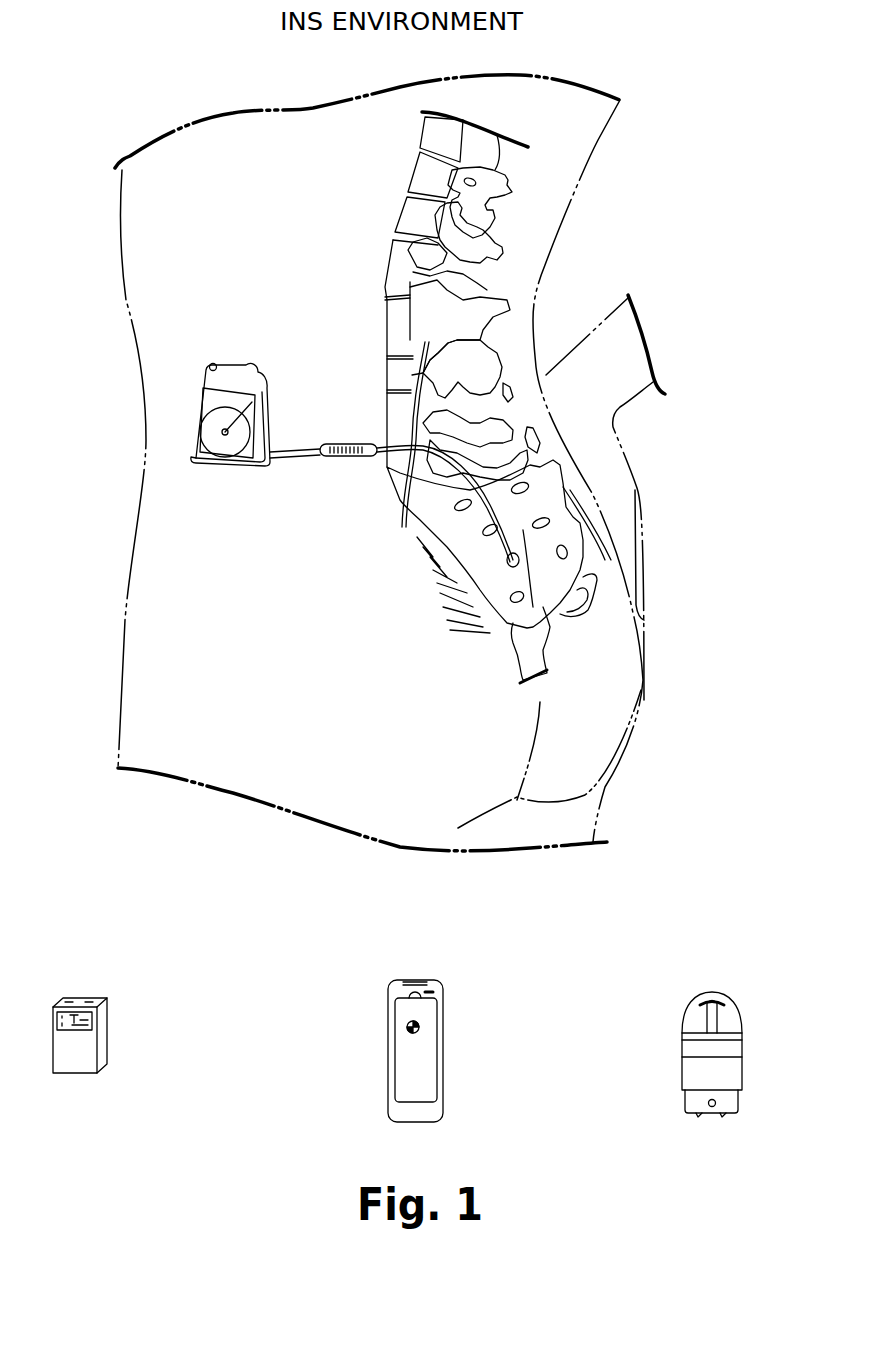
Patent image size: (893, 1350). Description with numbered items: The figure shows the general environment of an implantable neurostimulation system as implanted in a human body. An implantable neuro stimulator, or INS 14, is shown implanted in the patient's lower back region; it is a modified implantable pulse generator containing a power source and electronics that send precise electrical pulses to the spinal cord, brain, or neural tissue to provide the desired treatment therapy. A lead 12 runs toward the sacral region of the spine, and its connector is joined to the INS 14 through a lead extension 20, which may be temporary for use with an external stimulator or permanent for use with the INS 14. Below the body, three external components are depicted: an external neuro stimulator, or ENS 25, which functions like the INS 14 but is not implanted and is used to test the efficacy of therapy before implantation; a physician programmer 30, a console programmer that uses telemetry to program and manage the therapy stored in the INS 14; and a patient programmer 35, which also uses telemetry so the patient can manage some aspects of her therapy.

The lead 12 is at (425, 487).
The implantable neuro stimulator 14 is at (227, 477).
The lead extension 20 is at (297, 460).
The external neuro stimulator 25 is at (78, 1000).
The physician programmer 30 is at (415, 978).
The patient programmer 35 is at (712, 994).